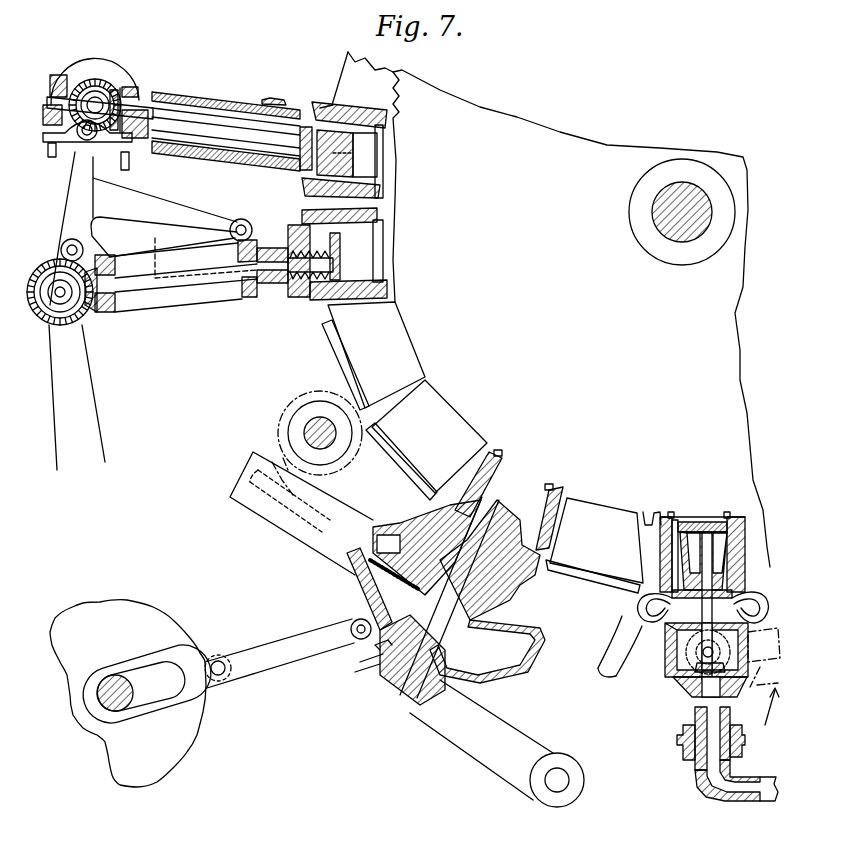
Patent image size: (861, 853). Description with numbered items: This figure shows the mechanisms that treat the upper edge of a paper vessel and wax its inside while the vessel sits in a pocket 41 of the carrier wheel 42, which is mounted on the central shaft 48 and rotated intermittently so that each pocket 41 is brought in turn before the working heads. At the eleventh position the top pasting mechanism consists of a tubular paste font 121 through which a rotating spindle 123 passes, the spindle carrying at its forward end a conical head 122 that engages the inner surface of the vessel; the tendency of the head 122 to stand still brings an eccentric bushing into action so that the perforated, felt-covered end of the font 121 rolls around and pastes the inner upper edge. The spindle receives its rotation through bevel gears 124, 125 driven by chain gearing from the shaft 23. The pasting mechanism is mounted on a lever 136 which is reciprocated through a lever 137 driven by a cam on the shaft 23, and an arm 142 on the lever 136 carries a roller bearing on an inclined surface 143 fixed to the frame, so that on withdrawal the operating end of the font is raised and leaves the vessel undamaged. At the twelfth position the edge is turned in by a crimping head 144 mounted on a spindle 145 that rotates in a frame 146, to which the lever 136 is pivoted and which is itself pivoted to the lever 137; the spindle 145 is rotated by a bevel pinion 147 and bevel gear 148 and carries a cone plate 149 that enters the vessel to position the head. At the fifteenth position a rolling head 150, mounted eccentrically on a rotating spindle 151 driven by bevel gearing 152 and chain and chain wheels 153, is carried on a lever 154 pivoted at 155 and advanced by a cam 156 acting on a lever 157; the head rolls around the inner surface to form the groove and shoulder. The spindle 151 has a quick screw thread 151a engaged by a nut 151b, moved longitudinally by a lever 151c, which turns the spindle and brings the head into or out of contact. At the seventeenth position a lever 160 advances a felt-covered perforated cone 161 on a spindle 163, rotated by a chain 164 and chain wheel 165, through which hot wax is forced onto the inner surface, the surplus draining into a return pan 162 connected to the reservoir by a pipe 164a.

The shaft 23 is at (112, 678).
The pocket 41 is at (398, 118).
The wheel 42 is at (334, 72).
The central shaft 48 is at (655, 210).
The paste font 121 is at (190, 97).
The conical head 122 is at (358, 150).
The rotating spindle 123 is at (232, 120).
The bevel gear 124 is at (88, 82).
The bevel gear 125 is at (118, 95).
The lever 136 is at (76, 185).
The lever 137 is at (84, 384).
The arm 142 is at (155, 203).
The inclined surface 143 is at (152, 239).
The crimping head 144 is at (297, 290).
The spindle 145 is at (150, 290).
The frame 146 is at (210, 292).
The bevel pinion 147 is at (40, 265).
The bevel gear 148 is at (92, 305).
The cone plate 149 is at (343, 238).
The head 150 is at (492, 506).
The rotating spindle 151 is at (522, 586).
The quick screw thread 151a is at (395, 705).
The nut 151b is at (372, 668).
The lever 151c is at (470, 740).
The bevel gearing 152 is at (282, 420).
The chain and chain wheels 153 is at (425, 547).
The lever 154 is at (312, 513).
The pivot 155 is at (316, 420).
The cam 156 is at (185, 736).
The lever 157 is at (258, 647).
The lever 160 is at (768, 668).
The perforated cone 161 is at (712, 525).
The return pan 162 is at (645, 604).
The spindle 163 is at (694, 699).
The chain 164 is at (764, 710).
The pipe 164a is at (612, 655).
The chain wheel 165 is at (685, 655).